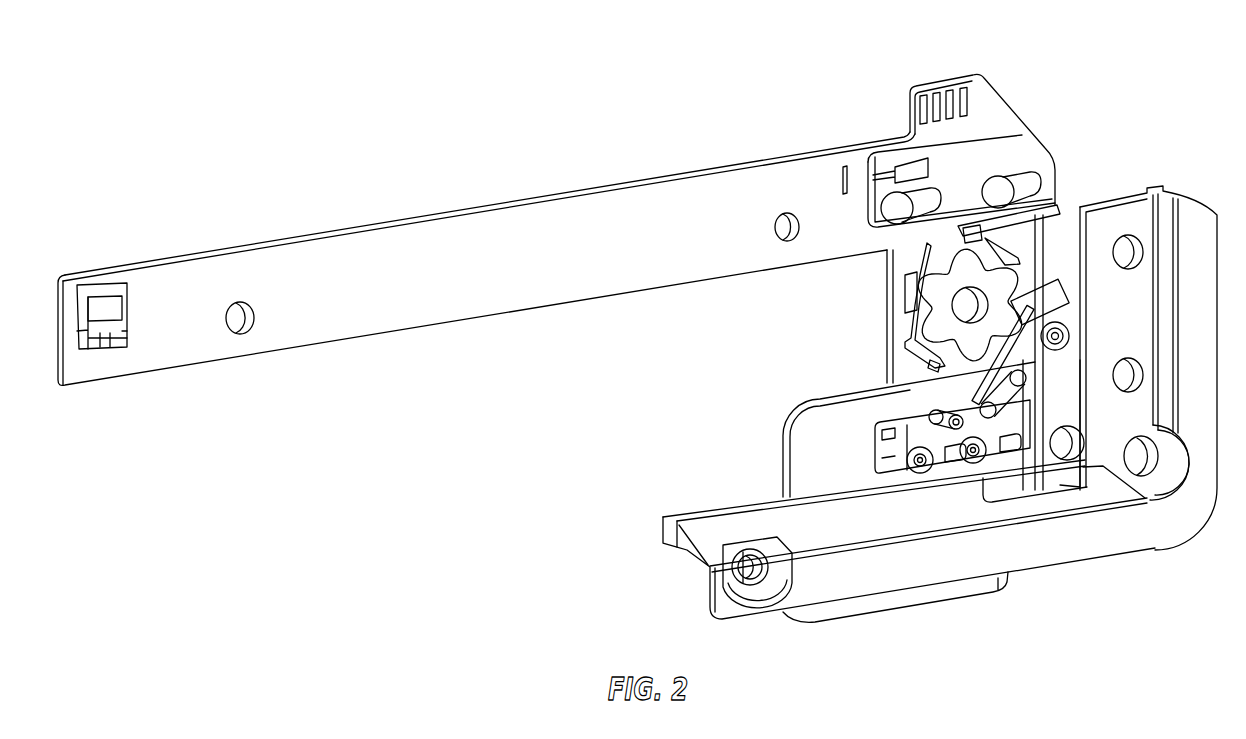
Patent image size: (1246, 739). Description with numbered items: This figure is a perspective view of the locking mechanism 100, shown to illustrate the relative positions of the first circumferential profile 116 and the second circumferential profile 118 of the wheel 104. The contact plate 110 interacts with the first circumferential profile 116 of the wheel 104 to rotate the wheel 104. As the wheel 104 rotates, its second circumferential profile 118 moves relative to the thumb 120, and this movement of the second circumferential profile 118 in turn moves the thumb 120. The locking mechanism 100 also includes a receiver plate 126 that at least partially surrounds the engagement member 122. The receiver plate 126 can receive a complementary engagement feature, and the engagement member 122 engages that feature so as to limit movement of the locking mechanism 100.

The locking mechanism 100 is at (637, 329).
The contact plate 110 is at (1013, 152).
The wheel 104 is at (1024, 246).
The first circumferential profile 116 is at (920, 252).
The second circumferential profile 118 is at (914, 284).
The thumb 120 is at (1068, 216).
The engagement member 122 is at (1053, 478).
The receiver plate 126 is at (865, 571).